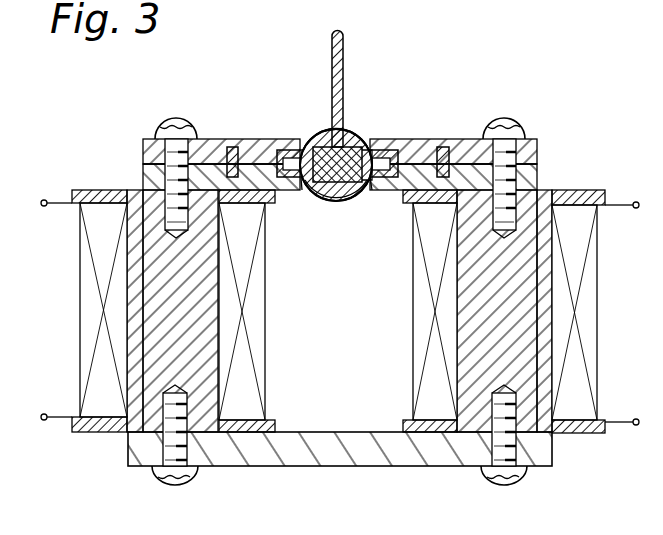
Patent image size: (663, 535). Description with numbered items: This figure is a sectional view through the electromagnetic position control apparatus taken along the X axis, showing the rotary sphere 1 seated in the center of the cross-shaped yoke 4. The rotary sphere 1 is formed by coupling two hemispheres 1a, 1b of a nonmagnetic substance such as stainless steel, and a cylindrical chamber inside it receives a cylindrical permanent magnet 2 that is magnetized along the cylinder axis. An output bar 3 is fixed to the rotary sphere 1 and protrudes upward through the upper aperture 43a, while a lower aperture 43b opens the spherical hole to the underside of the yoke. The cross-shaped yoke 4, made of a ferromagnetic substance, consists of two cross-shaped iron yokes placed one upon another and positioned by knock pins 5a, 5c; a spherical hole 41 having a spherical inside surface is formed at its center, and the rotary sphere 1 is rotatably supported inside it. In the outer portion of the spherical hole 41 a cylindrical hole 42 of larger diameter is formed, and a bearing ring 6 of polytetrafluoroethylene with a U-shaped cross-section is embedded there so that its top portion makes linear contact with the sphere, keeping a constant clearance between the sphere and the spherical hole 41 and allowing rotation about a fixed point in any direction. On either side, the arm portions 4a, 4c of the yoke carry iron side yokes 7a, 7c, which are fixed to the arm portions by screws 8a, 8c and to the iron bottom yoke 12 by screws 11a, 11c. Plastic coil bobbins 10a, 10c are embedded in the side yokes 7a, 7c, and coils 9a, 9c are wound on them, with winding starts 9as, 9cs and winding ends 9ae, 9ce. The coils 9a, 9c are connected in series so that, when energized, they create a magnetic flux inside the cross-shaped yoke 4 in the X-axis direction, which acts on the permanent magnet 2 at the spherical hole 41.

The rotary sphere 1 is at (349, 122).
The hemisphere 1a is at (362, 133).
The hemisphere 1b is at (335, 203).
The cylindrical permanent magnet 2 is at (313, 197).
The output bar 3 is at (332, 88).
The cross-shaped yoke 4 is at (270, 138).
The arm portion 4a is at (538, 148).
The arm portion 4c is at (147, 147).
The knock pin 5a is at (475, 140).
The knock pin 5c is at (232, 146).
The bearing ring 6 is at (393, 191).
The side yoke 7a is at (522, 267).
The side yoke 7c is at (148, 252).
The screw 8a is at (518, 128).
The screw 8c is at (163, 125).
The coil 9a is at (592, 308).
The coil 9c is at (88, 304).
The winding start 9as is at (636, 202).
The winding end 9ae is at (636, 425).
The winding start 9cs is at (44, 200).
The winding end 9ce is at (44, 420).
The coil bobbin 10a is at (542, 347).
The coil bobbin 10c is at (130, 342).
The screw 11a is at (487, 477).
The screw 11c is at (195, 470).
The bottom yoke 12 is at (347, 457).
The spherical hole 41 is at (378, 134).
The cylindrical hole 42 is at (392, 140).
The aperture 43a is at (368, 128).
The aperture 43b is at (362, 202).